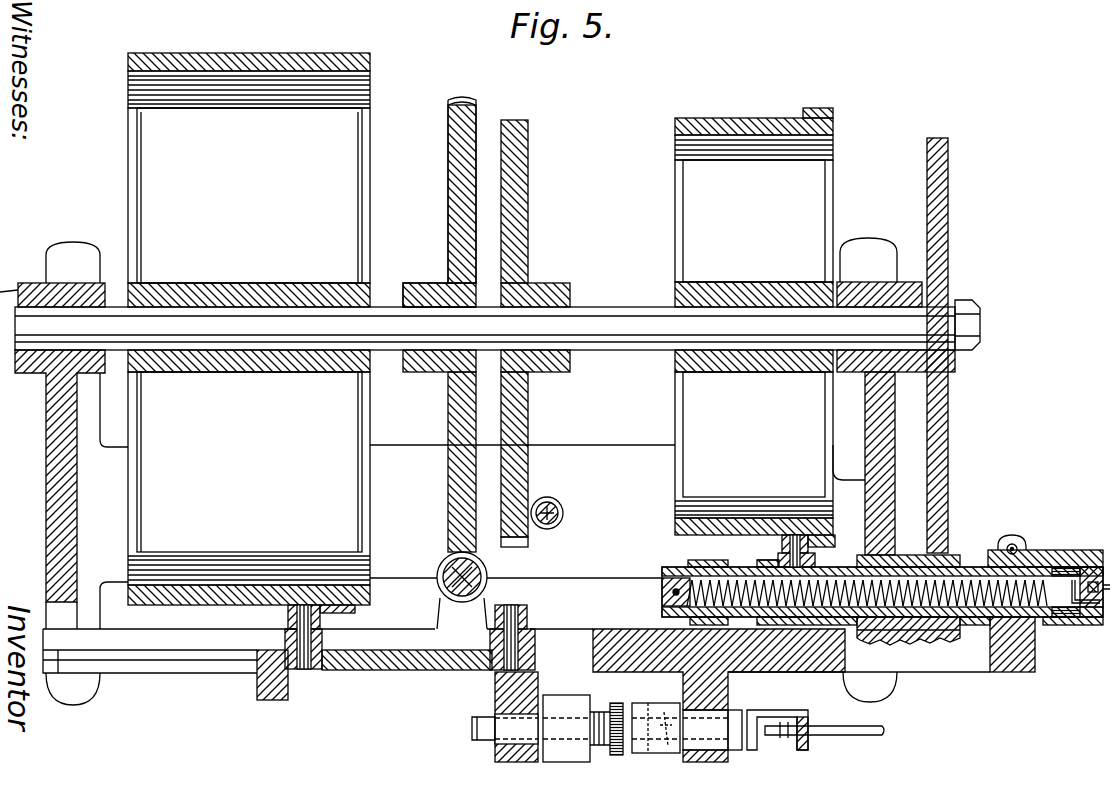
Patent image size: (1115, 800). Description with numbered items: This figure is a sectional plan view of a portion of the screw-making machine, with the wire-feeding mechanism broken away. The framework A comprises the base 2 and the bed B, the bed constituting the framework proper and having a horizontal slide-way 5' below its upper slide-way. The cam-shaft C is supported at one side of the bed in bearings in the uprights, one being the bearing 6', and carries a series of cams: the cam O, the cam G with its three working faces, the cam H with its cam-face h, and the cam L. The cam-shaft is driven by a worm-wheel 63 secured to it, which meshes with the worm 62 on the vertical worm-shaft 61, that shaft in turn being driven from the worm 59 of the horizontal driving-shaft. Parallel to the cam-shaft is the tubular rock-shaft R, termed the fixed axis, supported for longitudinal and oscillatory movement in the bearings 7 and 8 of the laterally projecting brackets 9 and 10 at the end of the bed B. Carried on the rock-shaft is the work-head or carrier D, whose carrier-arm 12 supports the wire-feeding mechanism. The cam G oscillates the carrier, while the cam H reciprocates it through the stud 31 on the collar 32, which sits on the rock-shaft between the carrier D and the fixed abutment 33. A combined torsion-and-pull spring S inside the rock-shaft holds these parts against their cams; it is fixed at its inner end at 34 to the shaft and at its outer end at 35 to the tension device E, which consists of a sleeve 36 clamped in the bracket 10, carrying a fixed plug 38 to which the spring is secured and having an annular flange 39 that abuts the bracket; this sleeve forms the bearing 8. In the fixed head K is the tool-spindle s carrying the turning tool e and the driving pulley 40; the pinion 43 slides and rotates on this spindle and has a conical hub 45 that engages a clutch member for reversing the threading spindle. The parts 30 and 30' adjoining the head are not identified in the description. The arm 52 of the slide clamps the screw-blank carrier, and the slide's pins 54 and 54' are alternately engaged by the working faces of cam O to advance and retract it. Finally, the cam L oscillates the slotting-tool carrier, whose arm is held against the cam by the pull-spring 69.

The cam-shaft C is at (497, 325).
The cam O is at (249, 329).
The cam-wheel H is at (754, 326).
The cam-face h is at (803, 113).
The worm-wheel 63 is at (448, 473).
The cam L is at (528, 425).
The base 2 is at (602, 445).
The framework A is at (64, 435).
The bearing 6' is at (894, 359).
The cam G is at (949, 412).
The worm-shaft 61 is at (485, 575).
The worm 62 is at (442, 584).
The pull-spring 69 is at (558, 505).
The bed B is at (352, 614).
The slide-way 5' is at (150, 677).
The lug or pin 54 is at (320, 637).
The arm 52 is at (280, 700).
The worm 59 is at (380, 670).
The lug or pin 54' is at (518, 625).
The fixed head K is at (791, 669).
The bracket 30' is at (505, 728).
The driving pulley 40 is at (568, 762).
The tool-spindle s is at (594, 712).
The pinion 43 is at (617, 704).
The conical hub 45 is at (632, 755).
The bracket 30 is at (712, 747).
The turning or screw-shank-forming tool e is at (815, 726).
The combined torsion-and-pull spring S is at (898, 568).
The inner-end fastening of spring 34 is at (662, 583).
The bracket 9 is at (706, 560).
The bearing 7 is at (795, 590).
The abutment 33 is at (760, 560).
The stud or projection 31 is at (782, 543).
The collar 32 is at (820, 560).
The rock-shaft R is at (968, 567).
The annular flange 39 is at (1027, 550).
The sleeve 36 is at (1068, 567).
The tension device E is at (1095, 572).
The fixed plug 38 is at (1086, 617).
The outer-end fastening of spring 35 is at (1103, 617).
The bearing 8 is at (985, 625).
The work-head or carrier D is at (892, 632).
The carrier-arm 12 is at (920, 645).
The bracket 10 is at (1007, 672).